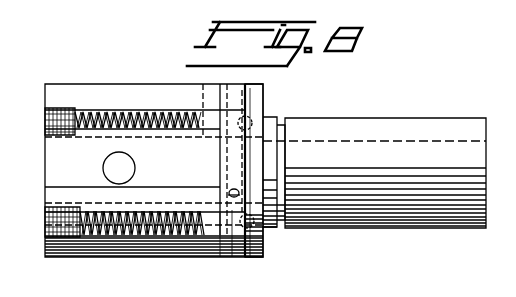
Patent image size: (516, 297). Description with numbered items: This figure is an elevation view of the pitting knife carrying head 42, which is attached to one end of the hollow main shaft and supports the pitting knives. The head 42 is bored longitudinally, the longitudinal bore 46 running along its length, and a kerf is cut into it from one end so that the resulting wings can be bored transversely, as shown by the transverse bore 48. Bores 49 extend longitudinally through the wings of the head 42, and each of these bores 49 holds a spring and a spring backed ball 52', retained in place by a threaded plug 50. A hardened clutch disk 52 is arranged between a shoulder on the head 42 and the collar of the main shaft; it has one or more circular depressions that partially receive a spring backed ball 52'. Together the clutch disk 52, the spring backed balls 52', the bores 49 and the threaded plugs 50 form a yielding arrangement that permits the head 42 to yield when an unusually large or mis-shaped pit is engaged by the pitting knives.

The knife carrying head 42 is at (62, 100).
The longitudinal bore 46 is at (368, 150).
The transverse bore 48 is at (125, 173).
The longitudinal bore 49 is at (107, 113).
The threaded plug 50 is at (45, 237).
The clutch disk 52 is at (278, 165).
The spring backed ball 52' is at (240, 98).